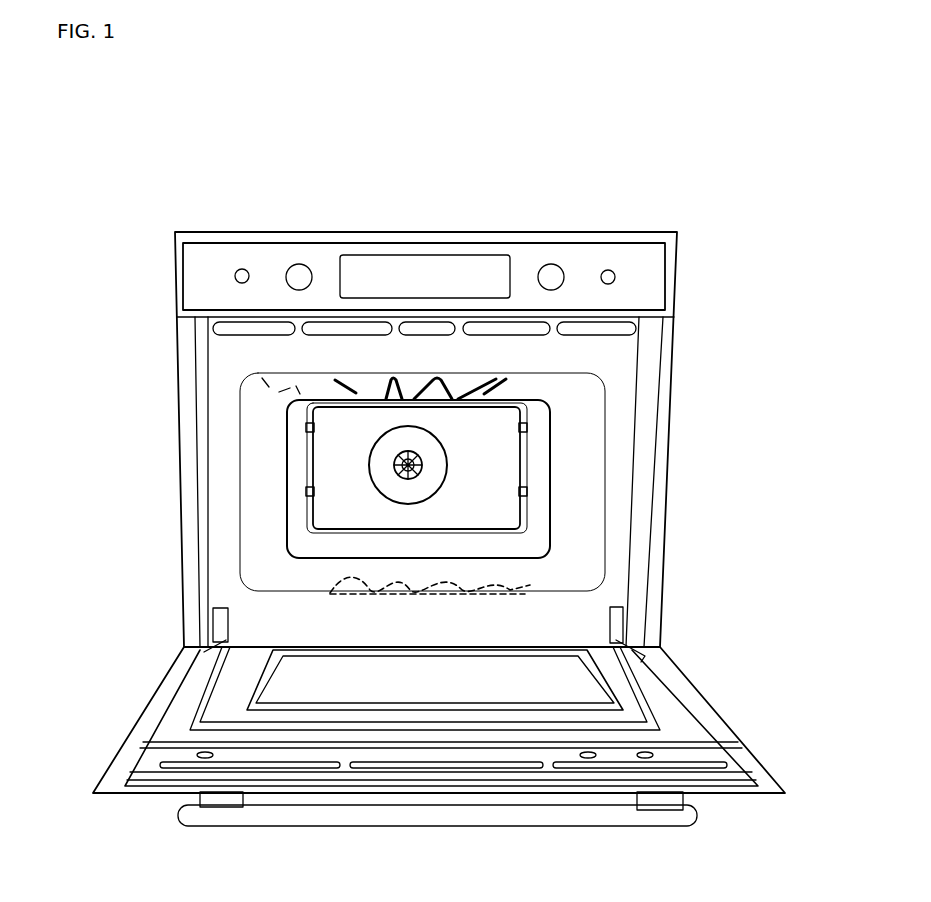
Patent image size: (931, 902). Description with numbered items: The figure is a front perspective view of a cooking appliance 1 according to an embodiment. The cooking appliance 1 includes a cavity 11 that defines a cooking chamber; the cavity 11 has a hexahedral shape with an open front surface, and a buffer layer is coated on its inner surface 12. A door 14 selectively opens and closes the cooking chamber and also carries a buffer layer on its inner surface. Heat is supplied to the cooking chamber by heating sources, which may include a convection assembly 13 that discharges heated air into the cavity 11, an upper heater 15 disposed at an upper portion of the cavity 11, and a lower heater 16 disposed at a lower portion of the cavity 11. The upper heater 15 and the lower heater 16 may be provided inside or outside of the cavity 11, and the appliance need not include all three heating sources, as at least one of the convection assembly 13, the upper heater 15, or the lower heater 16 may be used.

The cooking appliance 1 is at (165, 206).
The cavity 11 is at (256, 402).
The inner surface 12 is at (279, 389).
The convection assembly 13 is at (362, 466).
The door 14 is at (133, 717).
The upper heater 15 is at (567, 392).
The lower heater 16 is at (533, 586).